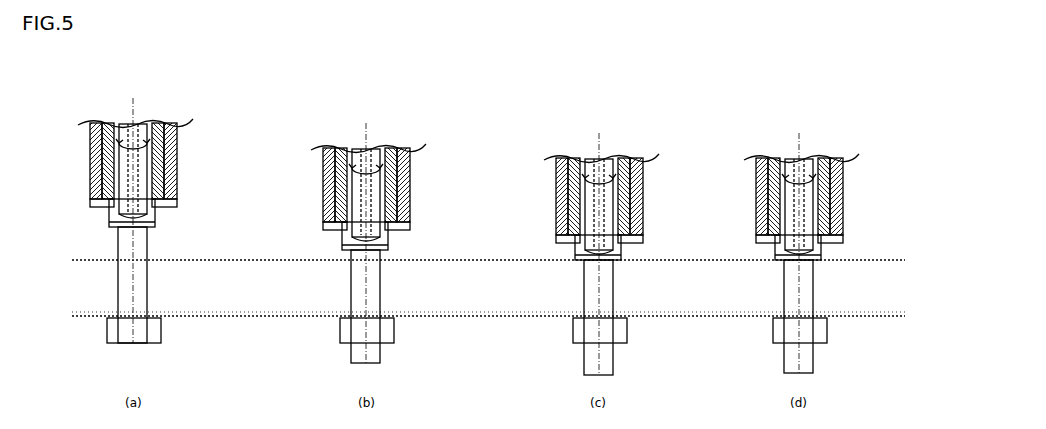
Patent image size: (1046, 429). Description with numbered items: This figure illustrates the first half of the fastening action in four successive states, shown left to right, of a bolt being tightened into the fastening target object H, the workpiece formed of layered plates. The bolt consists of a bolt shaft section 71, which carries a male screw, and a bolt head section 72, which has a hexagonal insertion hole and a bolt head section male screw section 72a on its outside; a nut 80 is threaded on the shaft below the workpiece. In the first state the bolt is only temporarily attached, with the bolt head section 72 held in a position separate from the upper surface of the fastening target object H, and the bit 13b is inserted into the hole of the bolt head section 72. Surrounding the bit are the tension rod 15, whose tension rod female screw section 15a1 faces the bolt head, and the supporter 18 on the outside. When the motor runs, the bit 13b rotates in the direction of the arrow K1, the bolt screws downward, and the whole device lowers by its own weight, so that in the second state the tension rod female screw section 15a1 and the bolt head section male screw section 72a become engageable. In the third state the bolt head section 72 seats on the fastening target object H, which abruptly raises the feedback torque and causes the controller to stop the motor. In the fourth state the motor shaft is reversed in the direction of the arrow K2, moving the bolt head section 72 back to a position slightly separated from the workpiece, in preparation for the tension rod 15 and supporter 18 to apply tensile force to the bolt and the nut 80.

The tension rod 15 is at (107, 124).
The arrow K1 is at (137, 141).
The arrow K2 is at (803, 176).
The supporter 18 is at (90, 155).
The tension rod female screw section 15a1 is at (90, 186).
The bit 13b is at (177, 152).
The bolt head section 72 is at (152, 227).
The bolt head section male screw section 72a is at (157, 205).
The bolt shaft section 71 is at (118, 281).
The nut 80 is at (138, 343).
The fastening target object H is at (207, 305).